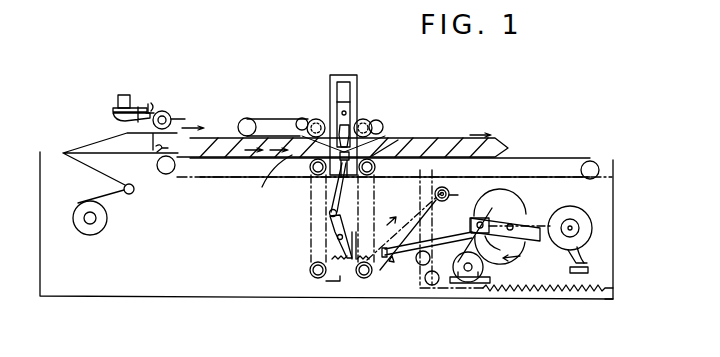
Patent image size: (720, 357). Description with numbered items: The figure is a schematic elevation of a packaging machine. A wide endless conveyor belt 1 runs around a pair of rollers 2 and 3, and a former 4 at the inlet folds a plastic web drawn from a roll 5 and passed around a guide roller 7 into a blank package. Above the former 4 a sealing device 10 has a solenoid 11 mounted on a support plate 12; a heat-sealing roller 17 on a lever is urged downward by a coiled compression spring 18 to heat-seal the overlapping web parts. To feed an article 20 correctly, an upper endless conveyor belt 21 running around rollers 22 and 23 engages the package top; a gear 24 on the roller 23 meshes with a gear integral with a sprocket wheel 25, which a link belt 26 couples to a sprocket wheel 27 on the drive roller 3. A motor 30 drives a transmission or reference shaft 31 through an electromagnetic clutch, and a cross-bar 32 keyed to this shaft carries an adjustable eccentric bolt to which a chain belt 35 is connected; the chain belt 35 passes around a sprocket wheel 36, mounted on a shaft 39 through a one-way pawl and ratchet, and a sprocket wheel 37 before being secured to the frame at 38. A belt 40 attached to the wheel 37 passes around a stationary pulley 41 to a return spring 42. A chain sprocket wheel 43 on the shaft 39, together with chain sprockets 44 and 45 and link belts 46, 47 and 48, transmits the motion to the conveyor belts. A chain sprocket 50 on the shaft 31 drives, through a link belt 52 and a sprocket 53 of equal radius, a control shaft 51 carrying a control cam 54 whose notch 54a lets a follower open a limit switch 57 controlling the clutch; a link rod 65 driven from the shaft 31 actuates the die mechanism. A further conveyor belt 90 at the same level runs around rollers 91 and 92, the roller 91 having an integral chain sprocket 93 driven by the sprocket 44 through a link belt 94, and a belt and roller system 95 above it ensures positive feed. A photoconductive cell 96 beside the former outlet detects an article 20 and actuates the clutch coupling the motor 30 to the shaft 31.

The endless conveyor belt 1 is at (195, 178).
The roller 2 is at (166, 175).
The drive roller 3 is at (312, 171).
The former 4 is at (78, 148).
The roll 5 is at (101, 226).
The guide roller 7 is at (133, 194).
The sealing device 10 is at (113, 104).
The solenoid 11 is at (120, 95).
The support plate 12 is at (150, 104).
The heat-sealing roller 17 is at (172, 118).
The coiled compression spring 18 is at (166, 112).
The article 20 is at (214, 138).
The endless conveyor belt 21 is at (281, 118).
The roller 22 is at (247, 118).
The roller 23 is at (317, 119).
The gear 24 is at (320, 140).
The sprocket wheel 25 is at (301, 118).
The link belt 26 is at (266, 181).
The sprocket wheel 27 is at (312, 192).
The motor 30 is at (470, 285).
The transmission or reference shaft 31 is at (520, 216).
The cross-bar 32 is at (536, 243).
The chain belt 35 is at (490, 216).
The sprocket wheel 36 is at (469, 193).
The sprocket wheel 37 is at (417, 268).
The frame anchorage 38 is at (419, 172).
The shaft 39 is at (446, 188).
The belt 40 is at (457, 290).
The stationary pulley 41 is at (431, 286).
The return spring 42 is at (538, 296).
The chain sprocket wheel 43 is at (466, 187).
The chain sprocket 44 is at (365, 280).
The chain sprocket 45 is at (312, 278).
The link belt 46 is at (407, 216).
The link belt 47 is at (339, 283).
The link belt 48 is at (313, 228).
The chain sprocket 50 is at (513, 224).
The control shaft 51 is at (573, 228).
The link belt 52 is at (584, 203).
The sprocket 53 is at (584, 250).
The control cam 54 is at (596, 222).
The notch 54a is at (588, 270).
The limit switch 57 is at (606, 296).
The link rod 65 is at (407, 260).
The conveyor belt 90 is at (545, 159).
The roller 91 is at (396, 150).
The roller 92 is at (594, 163).
The chain sprocket 93 is at (382, 131).
The link belt 94 is at (382, 169).
The belt and roller system 95 is at (365, 118).
The photoconductive cell 96 is at (156, 150).